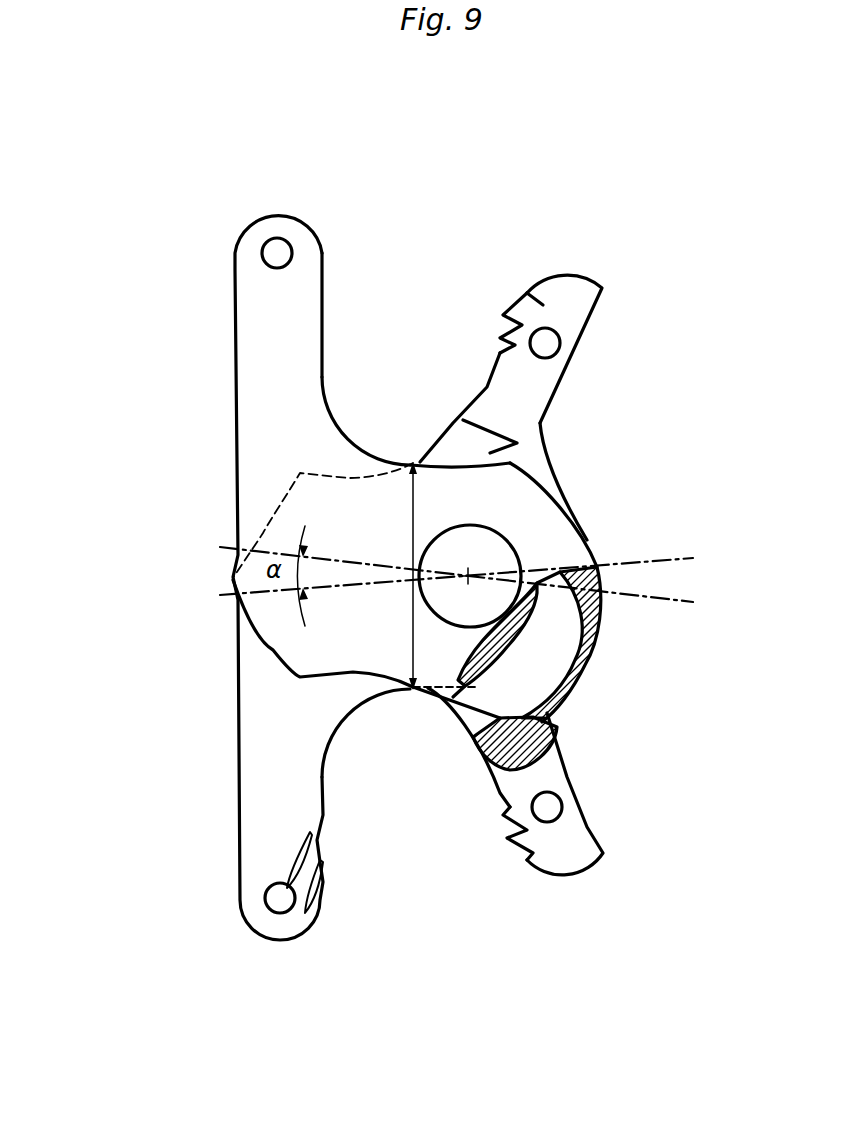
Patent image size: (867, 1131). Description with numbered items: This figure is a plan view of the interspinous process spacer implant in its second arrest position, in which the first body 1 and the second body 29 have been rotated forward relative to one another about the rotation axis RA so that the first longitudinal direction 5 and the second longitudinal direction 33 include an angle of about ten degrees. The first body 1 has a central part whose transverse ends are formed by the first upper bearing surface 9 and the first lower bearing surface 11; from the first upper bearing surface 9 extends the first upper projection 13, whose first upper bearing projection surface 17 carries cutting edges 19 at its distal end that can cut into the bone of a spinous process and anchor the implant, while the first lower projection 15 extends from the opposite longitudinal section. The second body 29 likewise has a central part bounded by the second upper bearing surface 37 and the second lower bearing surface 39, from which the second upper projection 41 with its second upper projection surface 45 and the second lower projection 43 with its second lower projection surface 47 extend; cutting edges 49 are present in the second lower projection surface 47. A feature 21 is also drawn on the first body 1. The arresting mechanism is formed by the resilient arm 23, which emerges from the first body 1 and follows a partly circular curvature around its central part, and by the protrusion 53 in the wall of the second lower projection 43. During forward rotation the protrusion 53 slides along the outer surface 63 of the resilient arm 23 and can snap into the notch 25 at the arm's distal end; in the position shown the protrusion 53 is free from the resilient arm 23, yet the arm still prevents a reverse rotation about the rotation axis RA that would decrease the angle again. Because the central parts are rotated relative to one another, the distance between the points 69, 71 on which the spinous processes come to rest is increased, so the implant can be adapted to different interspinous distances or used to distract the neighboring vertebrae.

The first body 1 is at (182, 682).
The first longitudinal direction 5 is at (498, 558).
The first upper bearing surface 9 is at (348, 478).
The first lower bearing surface 11 is at (443, 686).
The first upper projection 13 is at (580, 308).
The first lower projection 15 is at (262, 840).
The first upper bearing projection surface 17 is at (487, 387).
The cutting edges 19 is at (500, 338).
The spring clip 21 is at (323, 815).
The resilient arm 23 is at (585, 647).
The notch 25 is at (550, 713).
The second body 29 is at (184, 434).
The second longitudinal direction 33 is at (667, 560).
The second upper bearing surface 37 is at (450, 465).
The second lower bearing surface 39 is at (353, 672).
The second upper projection 41 is at (263, 307).
The second lower projection 43 is at (583, 845).
The second upper projection surface 45 is at (320, 337).
The second lower projection surface 47 is at (495, 774).
The cutting edges 49 is at (528, 857).
The protrusion 53 is at (510, 718).
The outer surface 63 is at (590, 672).
The point 69 is at (413, 463).
The point 71 is at (415, 690).
The rotation axis RA is at (469, 576).